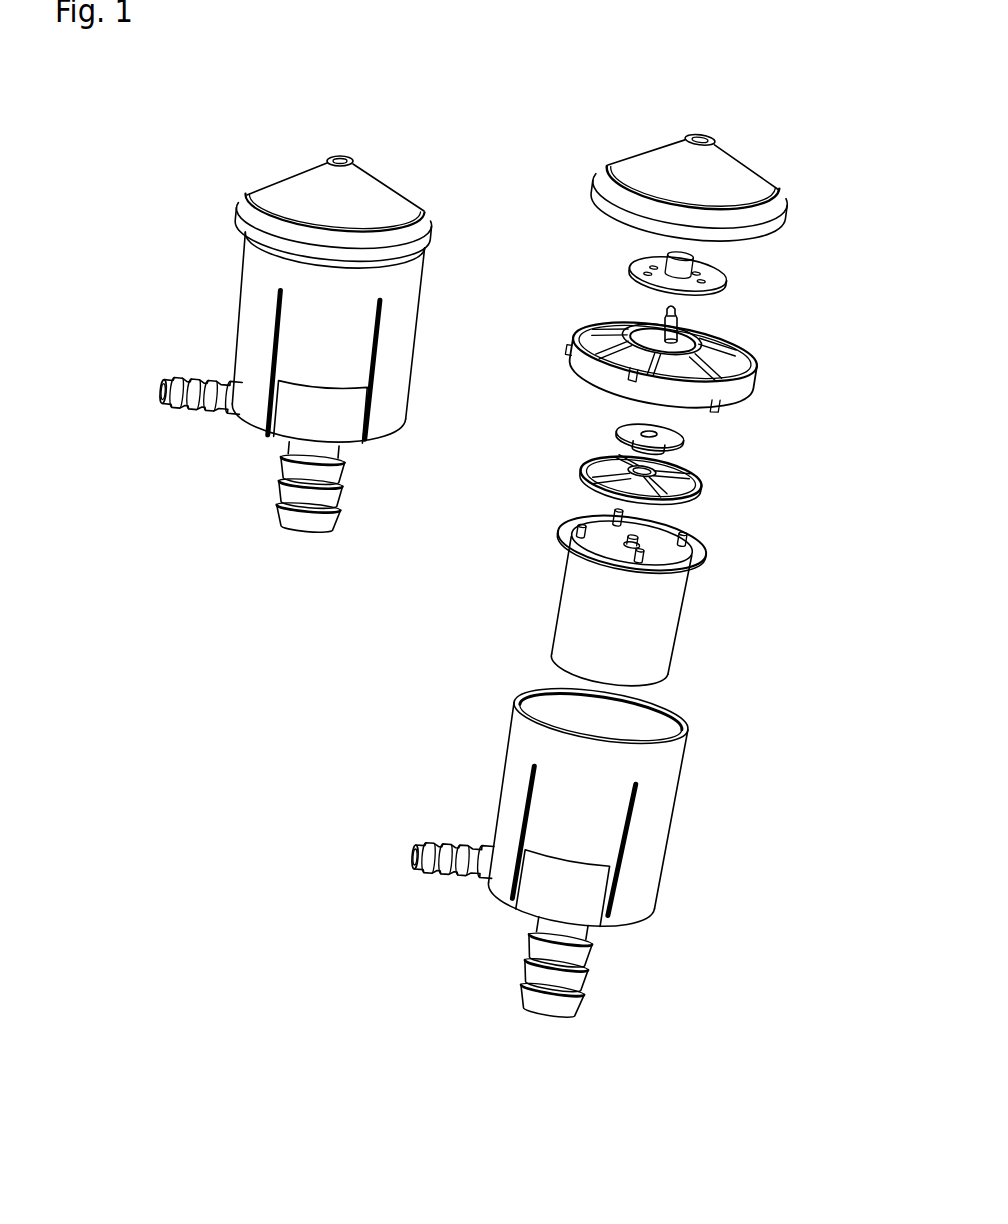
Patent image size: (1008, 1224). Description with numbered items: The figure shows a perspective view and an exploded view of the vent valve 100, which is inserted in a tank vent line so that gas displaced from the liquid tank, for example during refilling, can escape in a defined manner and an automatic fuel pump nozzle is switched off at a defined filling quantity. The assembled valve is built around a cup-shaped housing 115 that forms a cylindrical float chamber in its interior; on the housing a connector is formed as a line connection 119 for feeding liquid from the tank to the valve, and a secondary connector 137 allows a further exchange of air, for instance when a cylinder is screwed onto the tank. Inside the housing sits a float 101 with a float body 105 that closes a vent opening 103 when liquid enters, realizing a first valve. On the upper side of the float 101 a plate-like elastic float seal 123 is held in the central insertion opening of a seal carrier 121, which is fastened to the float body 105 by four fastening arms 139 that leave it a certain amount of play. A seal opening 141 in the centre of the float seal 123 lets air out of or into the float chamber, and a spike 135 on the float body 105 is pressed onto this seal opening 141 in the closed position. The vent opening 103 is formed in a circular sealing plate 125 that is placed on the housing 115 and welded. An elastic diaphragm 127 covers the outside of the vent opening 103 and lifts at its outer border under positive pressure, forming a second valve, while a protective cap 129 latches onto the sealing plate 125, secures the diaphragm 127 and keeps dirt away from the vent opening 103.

The vent valve 100 is at (158, 264).
The float 101 is at (677, 612).
The vent opening 103 is at (682, 336).
The float body 105 is at (617, 597).
The cup-shaped housing 115 is at (527, 761).
The line connection 119 is at (583, 988).
The seal carrier 121 is at (703, 494).
The float seal 123 is at (680, 439).
The sealing plate 125 is at (757, 377).
The elastic diaphragm 127 is at (723, 287).
The protective cap 129 is at (728, 183).
The spike 135 is at (657, 524).
The secondary connector 137 is at (433, 857).
The fastening arms 139 is at (692, 546).
The seal opening 141 is at (650, 431).